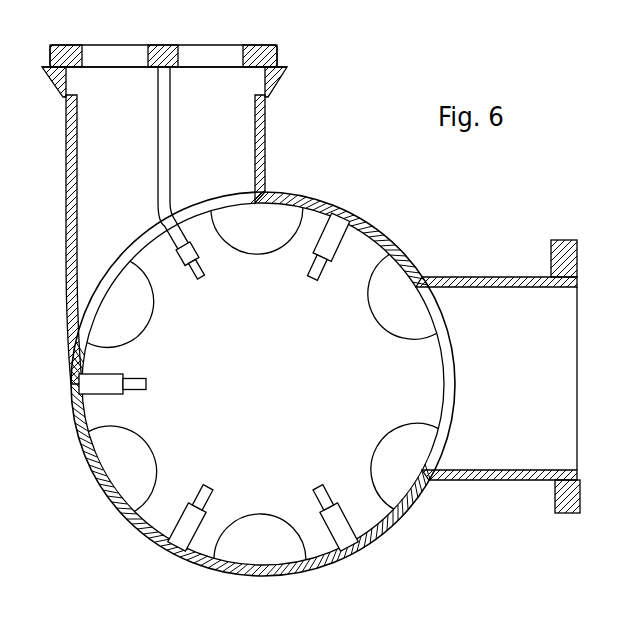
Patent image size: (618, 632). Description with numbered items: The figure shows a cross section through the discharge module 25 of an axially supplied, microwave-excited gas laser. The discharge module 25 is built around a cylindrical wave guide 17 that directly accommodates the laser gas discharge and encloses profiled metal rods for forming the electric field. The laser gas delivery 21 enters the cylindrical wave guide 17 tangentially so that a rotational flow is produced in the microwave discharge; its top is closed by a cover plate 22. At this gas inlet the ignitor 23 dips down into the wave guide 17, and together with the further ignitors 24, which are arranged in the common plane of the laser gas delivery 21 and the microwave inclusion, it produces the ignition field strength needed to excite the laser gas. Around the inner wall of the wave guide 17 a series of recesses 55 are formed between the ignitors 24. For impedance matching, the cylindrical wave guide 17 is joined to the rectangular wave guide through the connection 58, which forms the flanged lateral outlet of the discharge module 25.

The cylindrical wave guide 17 is at (140, 530).
The laser gas delivery 21 is at (266, 99).
The cover plate 22 is at (160, 47).
The ignitor 23 is at (158, 143).
The ignitors 24 is at (352, 538).
The discharge module 25 is at (318, 152).
The hemispherical recesses 55 is at (405, 485).
The connection 58 is at (558, 240).